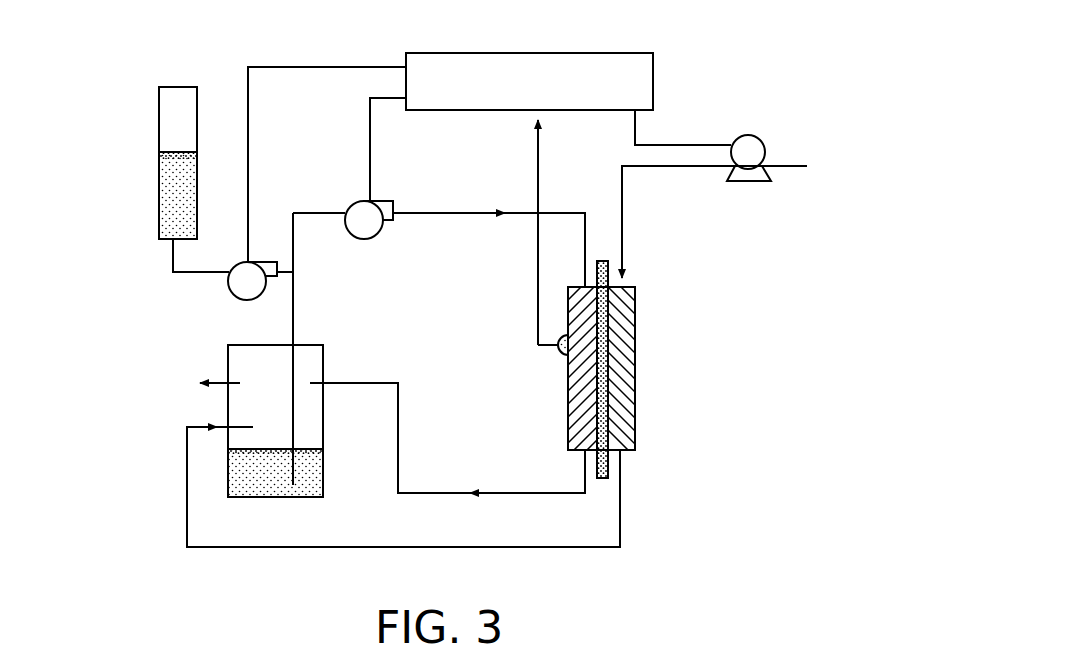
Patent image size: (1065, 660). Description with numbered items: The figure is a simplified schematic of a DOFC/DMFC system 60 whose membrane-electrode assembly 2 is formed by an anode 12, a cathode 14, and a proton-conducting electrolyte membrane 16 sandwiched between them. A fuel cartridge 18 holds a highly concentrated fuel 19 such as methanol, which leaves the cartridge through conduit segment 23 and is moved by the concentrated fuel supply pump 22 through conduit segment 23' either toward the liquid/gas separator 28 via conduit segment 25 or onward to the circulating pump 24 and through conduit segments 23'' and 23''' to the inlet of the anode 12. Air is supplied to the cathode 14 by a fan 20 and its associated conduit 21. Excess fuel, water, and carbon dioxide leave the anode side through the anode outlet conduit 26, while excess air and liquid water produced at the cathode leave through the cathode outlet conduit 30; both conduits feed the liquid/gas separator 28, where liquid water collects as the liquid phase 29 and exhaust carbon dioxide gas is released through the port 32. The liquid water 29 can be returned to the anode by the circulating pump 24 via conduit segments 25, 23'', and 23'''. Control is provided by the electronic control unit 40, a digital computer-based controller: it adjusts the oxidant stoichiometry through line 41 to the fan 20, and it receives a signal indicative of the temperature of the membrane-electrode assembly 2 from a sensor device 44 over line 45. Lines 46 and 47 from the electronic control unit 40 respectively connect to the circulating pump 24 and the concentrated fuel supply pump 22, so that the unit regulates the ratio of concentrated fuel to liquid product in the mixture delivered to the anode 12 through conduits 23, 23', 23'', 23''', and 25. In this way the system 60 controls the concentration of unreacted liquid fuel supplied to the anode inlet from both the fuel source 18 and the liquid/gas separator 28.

The membrane-electrode assembly 2 is at (613, 399).
The anode 12 is at (563, 397).
The cathode 14 is at (641, 378).
The proton-conducting electrolyte membrane 16 is at (599, 483).
The fuel cartridge 18 is at (175, 151).
The highly concentrated fuel 19 is at (151, 186).
The fan 20 is at (750, 126).
The conduit 21 is at (678, 175).
The concentrated fuel supply pump 22 is at (219, 295).
The conduit segment 23 is at (175, 241).
The conduit segment 23' is at (275, 236).
The conduit segment 23'' is at (320, 180).
The conduit segment 23''' is at (489, 217).
The circulating pump 24 is at (387, 235).
The conduit segment 25 is at (296, 314).
The anode outlet conduit 26 is at (525, 498).
The liquid/gas separator 28 is at (309, 436).
The liquid phase 29 is at (262, 494).
The cathode outlet conduit 30 is at (628, 480).
The port 32 is at (218, 387).
The electronic control unit 40 is at (657, 82).
The line 41 is at (675, 137).
The sensor device 44 is at (556, 357).
The line 45 is at (531, 252).
The line 46 is at (378, 127).
The line 47 is at (322, 62).
The DOFC/DMFC system 60 is at (87, 257).